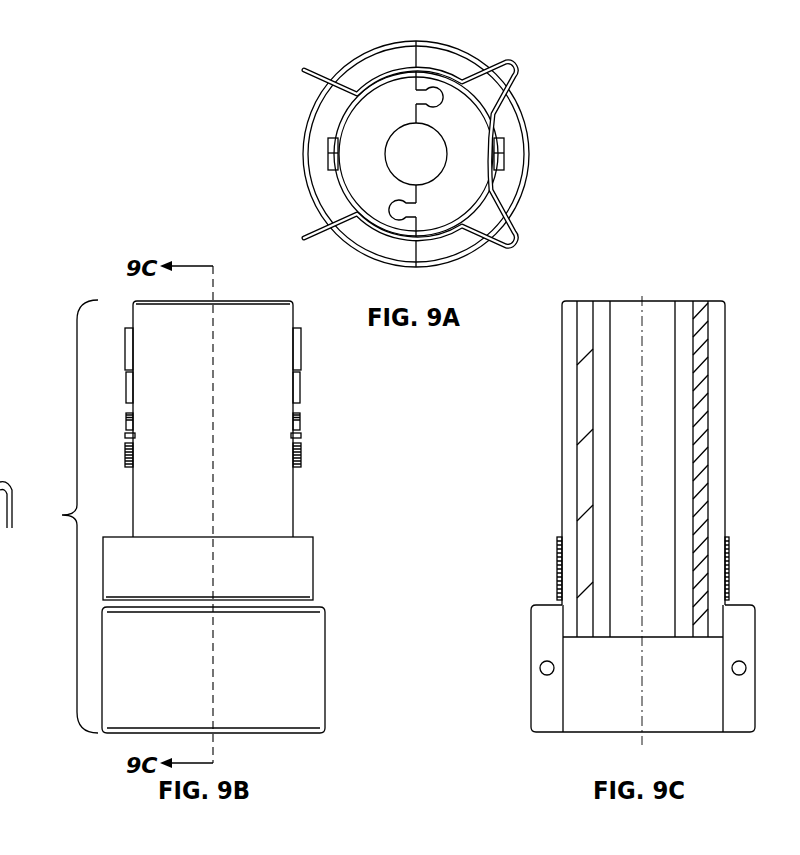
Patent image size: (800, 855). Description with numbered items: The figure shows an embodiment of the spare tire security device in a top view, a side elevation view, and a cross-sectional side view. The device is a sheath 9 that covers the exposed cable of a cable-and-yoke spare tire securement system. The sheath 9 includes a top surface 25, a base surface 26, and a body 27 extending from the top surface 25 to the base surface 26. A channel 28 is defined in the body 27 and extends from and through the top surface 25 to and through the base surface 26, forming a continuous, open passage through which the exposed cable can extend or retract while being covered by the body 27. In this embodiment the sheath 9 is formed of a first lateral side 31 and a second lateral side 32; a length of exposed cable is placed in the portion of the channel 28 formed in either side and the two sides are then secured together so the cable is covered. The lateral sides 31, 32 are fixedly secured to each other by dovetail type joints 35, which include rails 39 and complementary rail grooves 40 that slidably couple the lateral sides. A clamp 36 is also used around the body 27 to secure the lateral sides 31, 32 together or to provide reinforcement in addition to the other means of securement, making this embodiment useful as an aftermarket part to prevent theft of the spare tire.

In FIG. 9A, the sheath 9 is at (388, 38).
In FIG. 9B, the sheath 9 is at (216, 401).
In FIG. 9B, the top surface 25 is at (229, 300).
In FIG. 9B, the base surface 26 is at (121, 736).
In FIG. 9B, the body 27 is at (62, 516).
In FIG. 9C, the channel 28 is at (636, 292).
In FIG. 9A, the first lateral side 31 is at (306, 150).
In FIG. 9B, the first lateral side 31 is at (131, 482).
In FIG. 9A, the second lateral side 32 is at (530, 150).
In FIG. 9B, the second lateral side 32 is at (294, 527).
In FIG. 9A, the dovetail type joints 35 is at (418, 97).
In FIG. 9A, the clamp 36 is at (308, 70).
In FIG. 9B, the clamp 36 is at (316, 546).
In FIG. 9C, the clamp 36 is at (730, 560).
In FIG. 9C, the rails 39 is at (700, 300).
In FIG. 9C, the rail grooves 40 is at (583, 300).